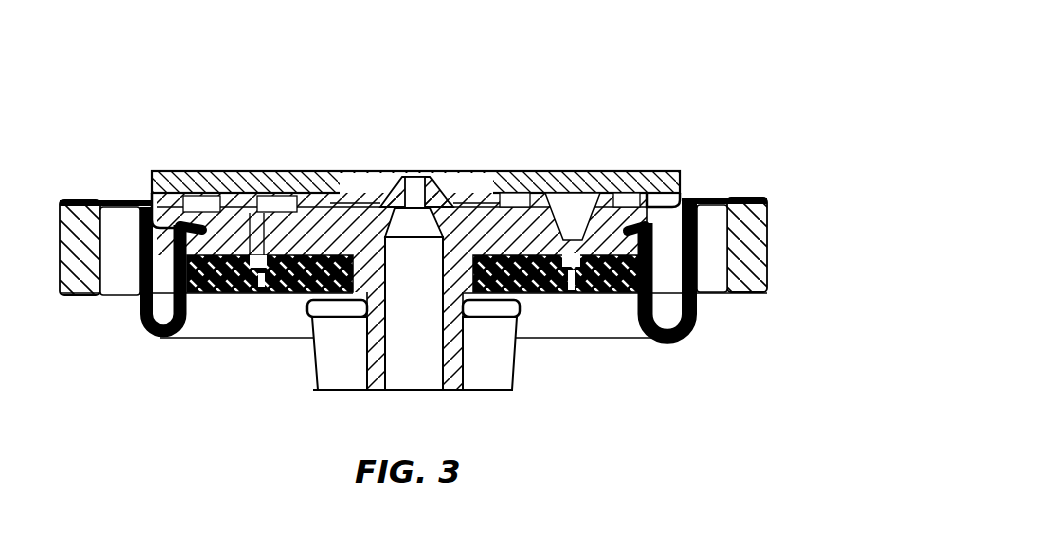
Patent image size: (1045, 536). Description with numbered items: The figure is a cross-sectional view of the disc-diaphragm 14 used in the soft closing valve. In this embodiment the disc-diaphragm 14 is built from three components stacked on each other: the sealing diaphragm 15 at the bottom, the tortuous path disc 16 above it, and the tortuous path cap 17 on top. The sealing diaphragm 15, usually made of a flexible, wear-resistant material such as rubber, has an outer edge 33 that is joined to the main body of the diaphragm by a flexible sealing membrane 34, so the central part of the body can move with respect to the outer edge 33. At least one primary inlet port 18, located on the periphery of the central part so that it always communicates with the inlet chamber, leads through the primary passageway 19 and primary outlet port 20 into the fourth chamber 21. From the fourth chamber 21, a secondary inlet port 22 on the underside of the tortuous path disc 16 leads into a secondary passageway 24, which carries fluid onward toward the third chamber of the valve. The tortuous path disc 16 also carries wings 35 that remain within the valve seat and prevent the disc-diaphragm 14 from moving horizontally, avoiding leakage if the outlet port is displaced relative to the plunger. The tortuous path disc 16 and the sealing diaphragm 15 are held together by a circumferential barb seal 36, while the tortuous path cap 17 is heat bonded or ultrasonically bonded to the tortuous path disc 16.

The disc-diaphragm 14 is at (712, 112).
The sealing diaphragm 15 is at (748, 330).
The tortuous path disc 16 is at (150, 198).
The tortuous path cap 17 is at (190, 172).
The primary inlet port 18 is at (258, 296).
The primary passageway 19 is at (243, 296).
The primary outlet port 20 is at (285, 296).
The fourth chamber 21 is at (257, 253).
The secondary inlet port 22 is at (570, 240).
The secondary passageway 24 is at (575, 240).
The outer edge 33 is at (767, 220).
The flexible sealing membrane 34 is at (678, 333).
The wings 35 is at (518, 318).
The circumferential barb seal 36 is at (153, 338).